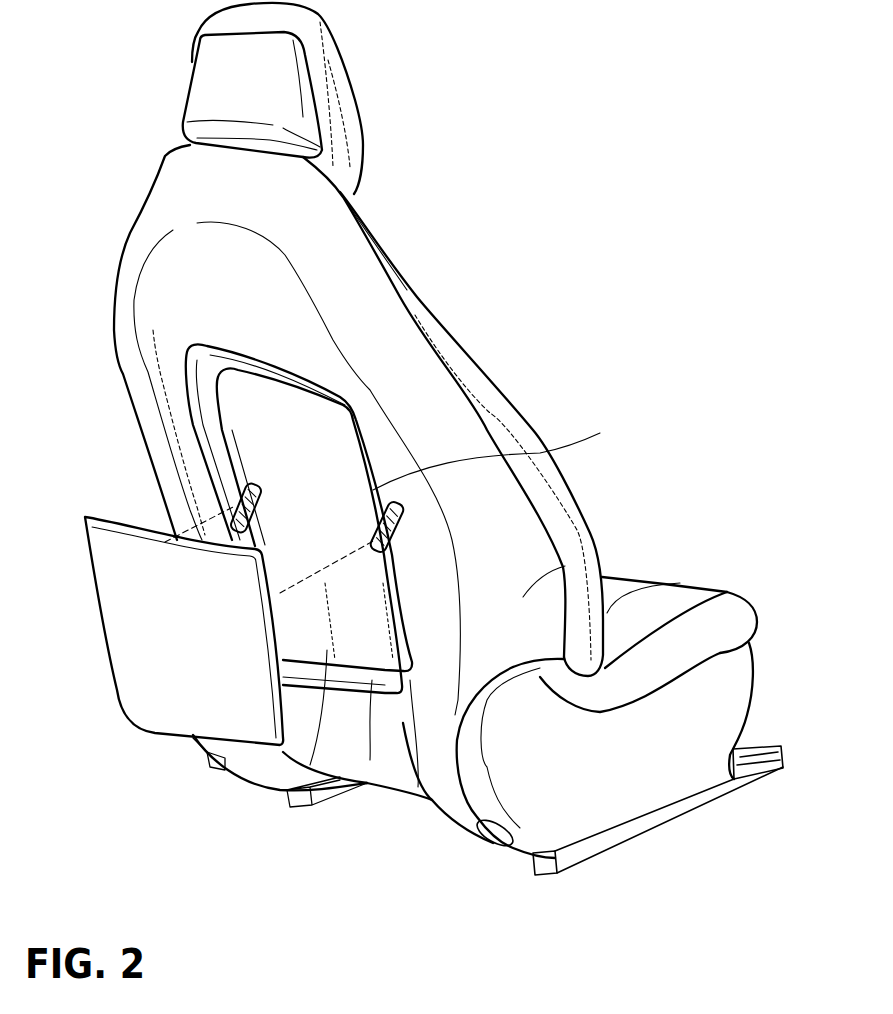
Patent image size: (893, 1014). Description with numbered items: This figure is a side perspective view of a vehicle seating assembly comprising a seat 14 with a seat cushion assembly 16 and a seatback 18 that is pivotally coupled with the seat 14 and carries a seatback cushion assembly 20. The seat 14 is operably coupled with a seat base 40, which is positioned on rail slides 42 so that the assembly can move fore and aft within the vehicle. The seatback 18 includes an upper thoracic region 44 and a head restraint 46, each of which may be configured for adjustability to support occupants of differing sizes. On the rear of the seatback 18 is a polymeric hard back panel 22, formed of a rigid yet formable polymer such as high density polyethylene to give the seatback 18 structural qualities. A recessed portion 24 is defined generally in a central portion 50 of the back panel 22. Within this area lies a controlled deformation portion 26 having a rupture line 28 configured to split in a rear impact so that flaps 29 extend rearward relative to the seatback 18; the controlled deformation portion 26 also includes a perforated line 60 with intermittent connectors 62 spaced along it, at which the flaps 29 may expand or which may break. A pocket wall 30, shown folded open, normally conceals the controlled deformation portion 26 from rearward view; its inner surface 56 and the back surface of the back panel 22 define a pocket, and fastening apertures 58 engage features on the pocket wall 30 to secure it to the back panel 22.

The seat 14 is at (733, 617).
The seat cushion assembly 16 is at (676, 600).
The seatback 18 is at (490, 410).
The seatback cushion assembly 20 is at (420, 313).
The polymeric hard back panel 22 is at (330, 253).
The recessed portion 24 is at (200, 383).
The controlled deformation portion 26 is at (418, 787).
The rupture line 28 is at (310, 765).
The flaps 29 is at (304, 629).
The pocket wall 30 is at (157, 693).
The seat base 40 is at (715, 720).
The rail slides 42 is at (760, 767).
The upper thoracic region 44 is at (560, 565).
The head restraint 46 is at (213, 97).
The central portion 50 is at (267, 447).
The inner surface 56 is at (385, 563).
The fastening apertures 58 is at (233, 493).
The perforated line 60 is at (370, 760).
The intermittent connector 62 is at (250, 753).